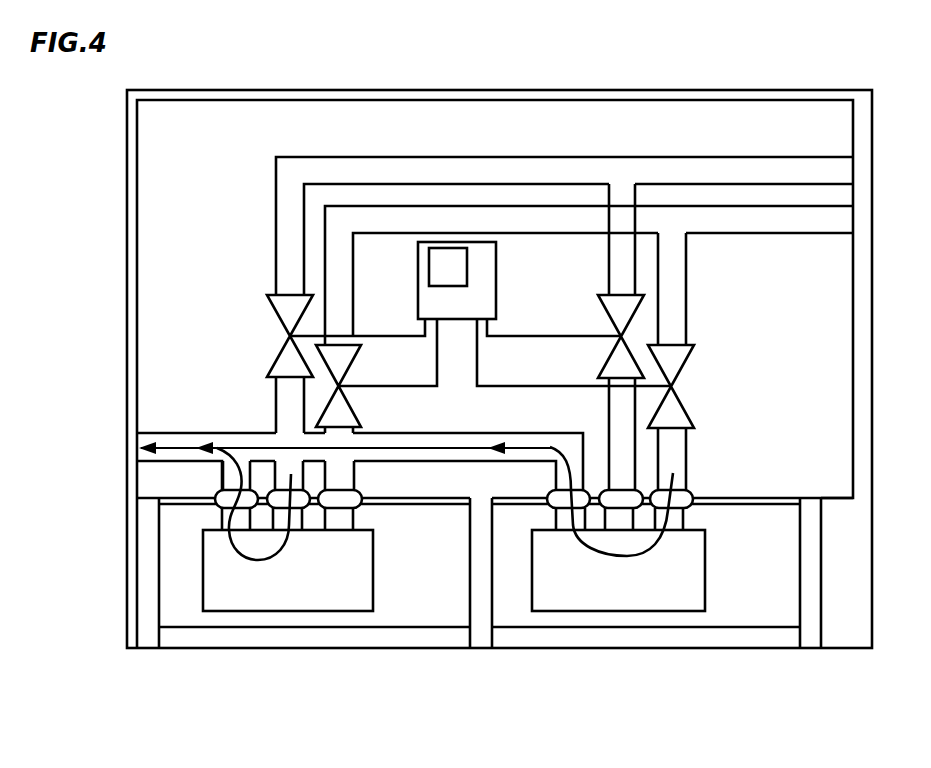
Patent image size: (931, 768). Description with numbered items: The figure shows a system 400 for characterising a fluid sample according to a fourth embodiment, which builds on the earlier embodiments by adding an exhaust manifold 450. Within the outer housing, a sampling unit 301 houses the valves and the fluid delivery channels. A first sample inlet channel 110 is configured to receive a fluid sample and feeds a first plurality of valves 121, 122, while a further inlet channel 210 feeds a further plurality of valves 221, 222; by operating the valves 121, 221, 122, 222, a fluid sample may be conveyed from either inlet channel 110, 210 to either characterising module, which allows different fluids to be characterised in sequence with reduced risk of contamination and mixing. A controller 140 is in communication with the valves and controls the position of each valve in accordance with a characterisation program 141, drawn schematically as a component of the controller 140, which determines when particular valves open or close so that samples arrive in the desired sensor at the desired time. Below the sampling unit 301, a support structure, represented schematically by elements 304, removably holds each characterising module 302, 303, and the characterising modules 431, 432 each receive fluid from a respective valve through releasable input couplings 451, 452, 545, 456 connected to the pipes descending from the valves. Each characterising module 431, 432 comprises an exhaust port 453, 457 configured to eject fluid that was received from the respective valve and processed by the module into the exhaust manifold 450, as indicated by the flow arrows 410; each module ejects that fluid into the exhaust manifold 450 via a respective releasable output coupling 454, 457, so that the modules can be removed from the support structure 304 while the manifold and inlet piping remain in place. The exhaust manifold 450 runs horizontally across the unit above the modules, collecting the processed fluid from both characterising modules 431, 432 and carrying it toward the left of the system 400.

The system 400 is at (683, 86).
The sampling unit 301 is at (558, 95).
The characterising module 302 is at (208, 635).
The characterising module 303 is at (591, 635).
The support structure 304 is at (147, 652).
The first sample inlet channel 110 is at (266, 160).
The further inlet channel 210 is at (315, 212).
The valve 121 is at (267, 320).
The valve 122 is at (644, 317).
The valve 221 is at (365, 414).
The valve 222 is at (695, 367).
The controller 140 is at (507, 283).
The characterisation program 141 is at (421, 266).
The exhaust manifold 450 is at (164, 424).
The first tank inlet valve 451 is at (313, 481).
The second tank inlet valve 452 is at (370, 511).
The exhaust port 453 is at (213, 521).
The releasable output coupling 454 is at (207, 488).
The exhaust port 457 is at (539, 487).
The third tank inlet valve 545 is at (648, 481).
The fourth tank inlet valve 456 is at (700, 513).
The characterising module 431 is at (385, 577).
The characterising module 432 is at (717, 579).
The flow arrows 410 is at (270, 565).